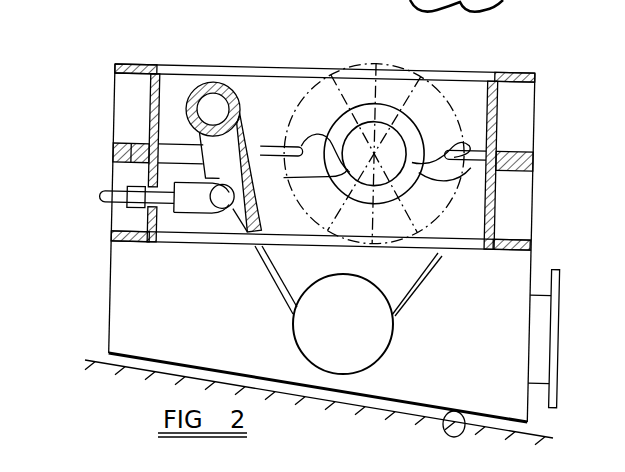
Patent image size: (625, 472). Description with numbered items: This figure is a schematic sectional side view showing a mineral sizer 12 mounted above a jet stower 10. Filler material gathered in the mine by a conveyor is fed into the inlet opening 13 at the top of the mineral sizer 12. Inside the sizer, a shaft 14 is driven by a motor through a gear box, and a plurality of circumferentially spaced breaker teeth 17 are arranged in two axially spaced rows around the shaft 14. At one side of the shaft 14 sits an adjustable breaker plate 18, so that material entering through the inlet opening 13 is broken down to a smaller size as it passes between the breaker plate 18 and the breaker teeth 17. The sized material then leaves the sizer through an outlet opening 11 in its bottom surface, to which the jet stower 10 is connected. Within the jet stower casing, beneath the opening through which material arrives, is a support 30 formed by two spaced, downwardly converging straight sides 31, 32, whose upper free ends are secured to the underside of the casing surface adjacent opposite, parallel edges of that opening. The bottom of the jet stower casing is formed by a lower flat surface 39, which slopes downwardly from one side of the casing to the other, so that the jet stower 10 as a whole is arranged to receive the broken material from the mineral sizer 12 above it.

The jet stower 10 is at (146, 295).
The outlet opening 11 is at (478, 254).
The mineral sizer 12 is at (476, 118).
The inlet opening 13 is at (155, 64).
The shaft 14 is at (420, 142).
The breaker teeth 17 is at (302, 146).
The adjustable breaker plate 18 is at (233, 237).
The support 30 is at (414, 306).
The straight side 31 is at (273, 287).
The straight side 32 is at (423, 273).
The lower flat surface 39 is at (462, 425).